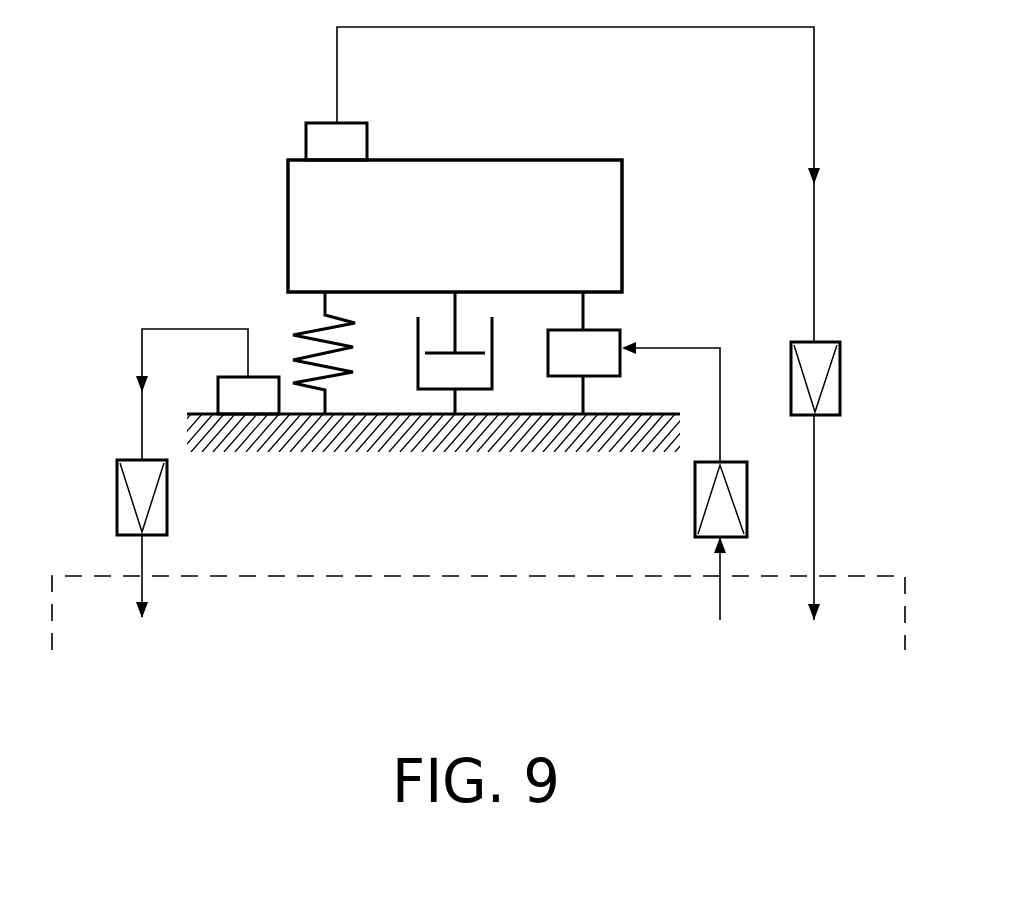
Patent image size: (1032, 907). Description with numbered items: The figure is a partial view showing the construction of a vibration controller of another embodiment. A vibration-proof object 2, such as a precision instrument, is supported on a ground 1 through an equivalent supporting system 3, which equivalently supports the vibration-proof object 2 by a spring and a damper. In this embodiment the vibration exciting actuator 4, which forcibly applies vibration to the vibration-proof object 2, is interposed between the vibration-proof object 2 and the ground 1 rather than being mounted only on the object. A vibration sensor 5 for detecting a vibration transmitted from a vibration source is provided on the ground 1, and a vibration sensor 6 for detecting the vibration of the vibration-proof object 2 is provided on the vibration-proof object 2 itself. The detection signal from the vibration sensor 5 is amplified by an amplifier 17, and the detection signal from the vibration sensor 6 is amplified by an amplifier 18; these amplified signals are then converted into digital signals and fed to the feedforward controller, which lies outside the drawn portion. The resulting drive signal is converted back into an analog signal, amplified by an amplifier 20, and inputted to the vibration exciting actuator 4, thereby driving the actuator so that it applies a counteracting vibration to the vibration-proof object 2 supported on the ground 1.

The ground 1 is at (648, 414).
The vibration-proof object 2 is at (530, 160).
The equivalent supporting system 3 is at (418, 340).
The vibration exciting actuator 4 is at (548, 361).
The vibration sensor 5 is at (218, 394).
The vibration sensor 6 is at (308, 124).
The amplifier 17 is at (167, 506).
The amplifier 18 is at (840, 344).
The amplifier 20 is at (747, 510).